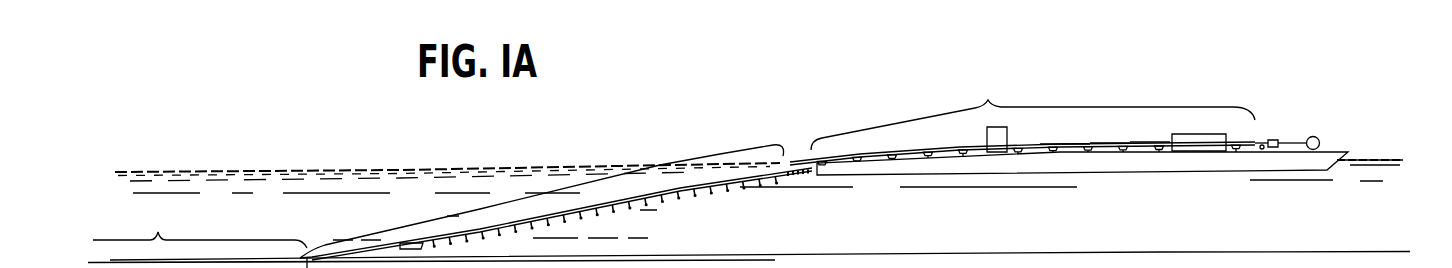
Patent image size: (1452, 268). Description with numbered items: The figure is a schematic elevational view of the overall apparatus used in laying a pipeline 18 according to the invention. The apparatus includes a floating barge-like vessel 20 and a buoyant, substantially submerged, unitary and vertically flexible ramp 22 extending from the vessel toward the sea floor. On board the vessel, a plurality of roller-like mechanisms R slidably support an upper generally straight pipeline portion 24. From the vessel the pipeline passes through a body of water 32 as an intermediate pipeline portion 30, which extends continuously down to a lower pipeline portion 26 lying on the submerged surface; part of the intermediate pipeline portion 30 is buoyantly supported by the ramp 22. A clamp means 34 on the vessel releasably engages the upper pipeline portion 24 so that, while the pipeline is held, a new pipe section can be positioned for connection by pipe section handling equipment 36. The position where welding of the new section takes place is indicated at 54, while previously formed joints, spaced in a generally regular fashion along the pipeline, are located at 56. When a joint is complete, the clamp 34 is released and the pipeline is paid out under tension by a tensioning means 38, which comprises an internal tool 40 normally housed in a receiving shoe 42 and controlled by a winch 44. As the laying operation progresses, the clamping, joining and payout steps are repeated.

The pipeline 18 is at (1022, 121).
The floating barge-like vessel 20 is at (1305, 174).
The ramp 22 is at (672, 196).
The upper pipeline portion 24 is at (883, 147).
The lower pipeline portion 26 is at (200, 229).
The intermediate pipeline portion 30 is at (647, 192).
The body of water 32 is at (367, 216).
The clamp means 34 is at (1007, 136).
The pipe section handling equipment 36 is at (1180, 129).
The tensioning means 38 is at (1290, 133).
The internal tool 40 is at (1262, 141).
The receiving shoe 42 is at (1272, 140).
The winch 44 is at (1322, 139).
The welding position 54 is at (1142, 134).
The previously formed joints 56 is at (1053, 137).
The roller-like mechanisms R is at (835, 165).